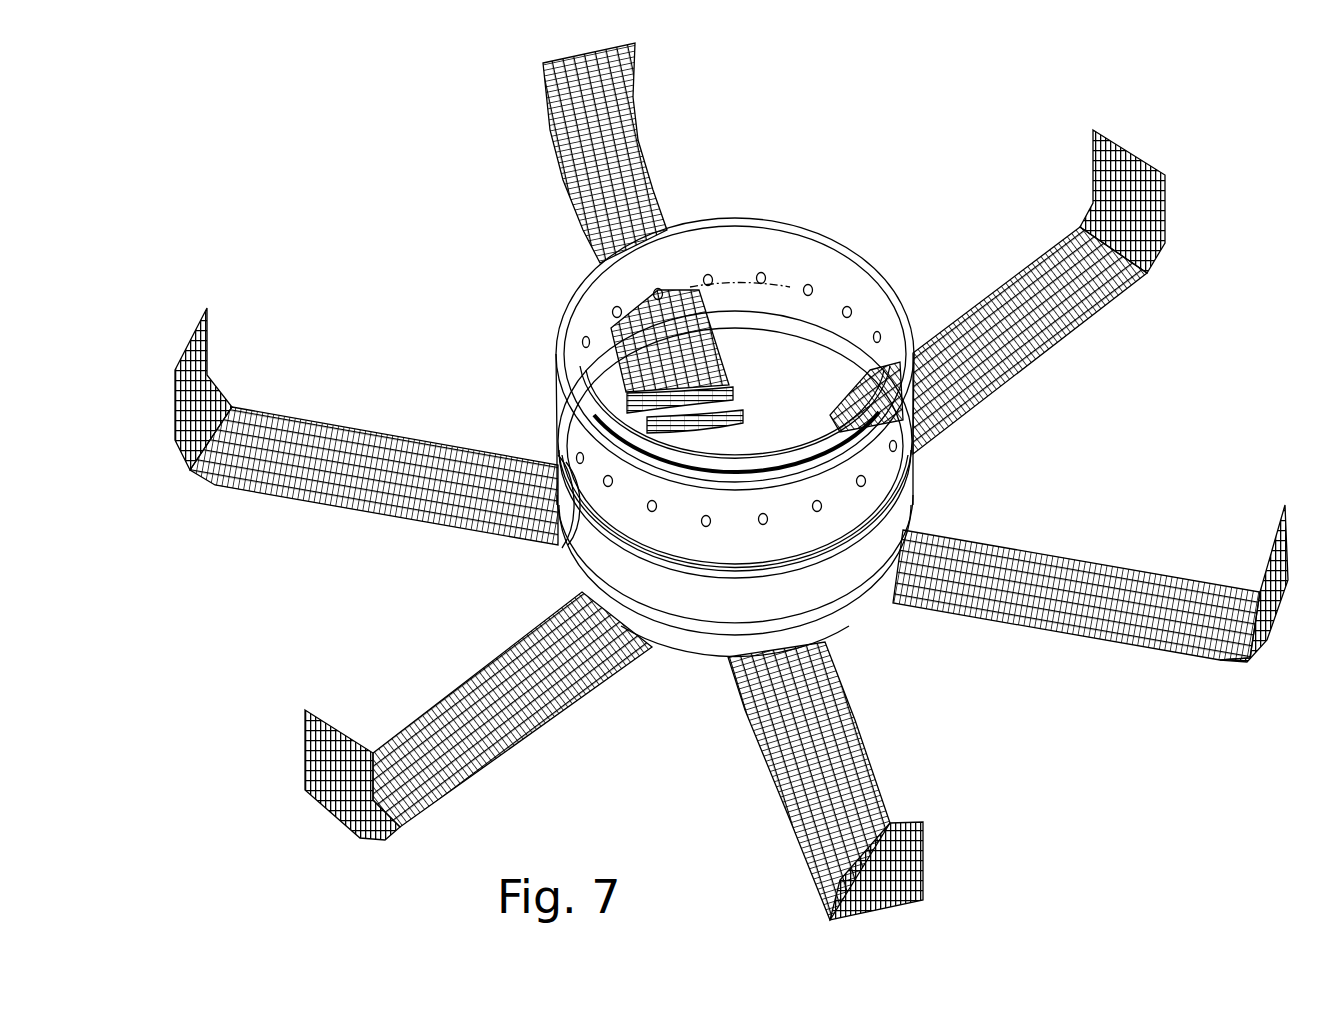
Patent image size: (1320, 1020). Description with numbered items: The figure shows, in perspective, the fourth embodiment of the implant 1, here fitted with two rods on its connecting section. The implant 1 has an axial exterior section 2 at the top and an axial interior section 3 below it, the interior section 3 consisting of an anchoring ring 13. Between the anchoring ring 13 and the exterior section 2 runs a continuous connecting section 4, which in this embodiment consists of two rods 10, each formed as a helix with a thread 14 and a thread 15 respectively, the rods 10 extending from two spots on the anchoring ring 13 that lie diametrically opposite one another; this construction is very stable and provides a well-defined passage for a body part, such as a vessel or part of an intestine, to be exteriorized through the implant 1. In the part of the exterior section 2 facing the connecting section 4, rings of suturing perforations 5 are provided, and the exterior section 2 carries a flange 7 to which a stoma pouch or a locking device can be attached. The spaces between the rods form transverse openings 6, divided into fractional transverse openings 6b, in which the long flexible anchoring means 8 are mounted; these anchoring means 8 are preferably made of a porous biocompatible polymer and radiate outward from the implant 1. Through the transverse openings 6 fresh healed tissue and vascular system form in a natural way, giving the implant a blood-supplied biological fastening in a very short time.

The implant 1 is at (404, 317).
The axial exterior section 2 is at (855, 290).
The axial interior section 3 is at (912, 502).
The connecting section 4 is at (623, 568).
The suturing perforations 5 is at (758, 272).
The transverse openings 6 is at (560, 563).
The fractional transverse openings 6b is at (712, 427).
The flange 7 is at (548, 397).
The anchoring means 8 is at (1143, 572).
The rods 10 is at (866, 577).
The anchoring ring 13 is at (703, 662).
The thread 14 is at (772, 624).
The thread 15 is at (708, 574).